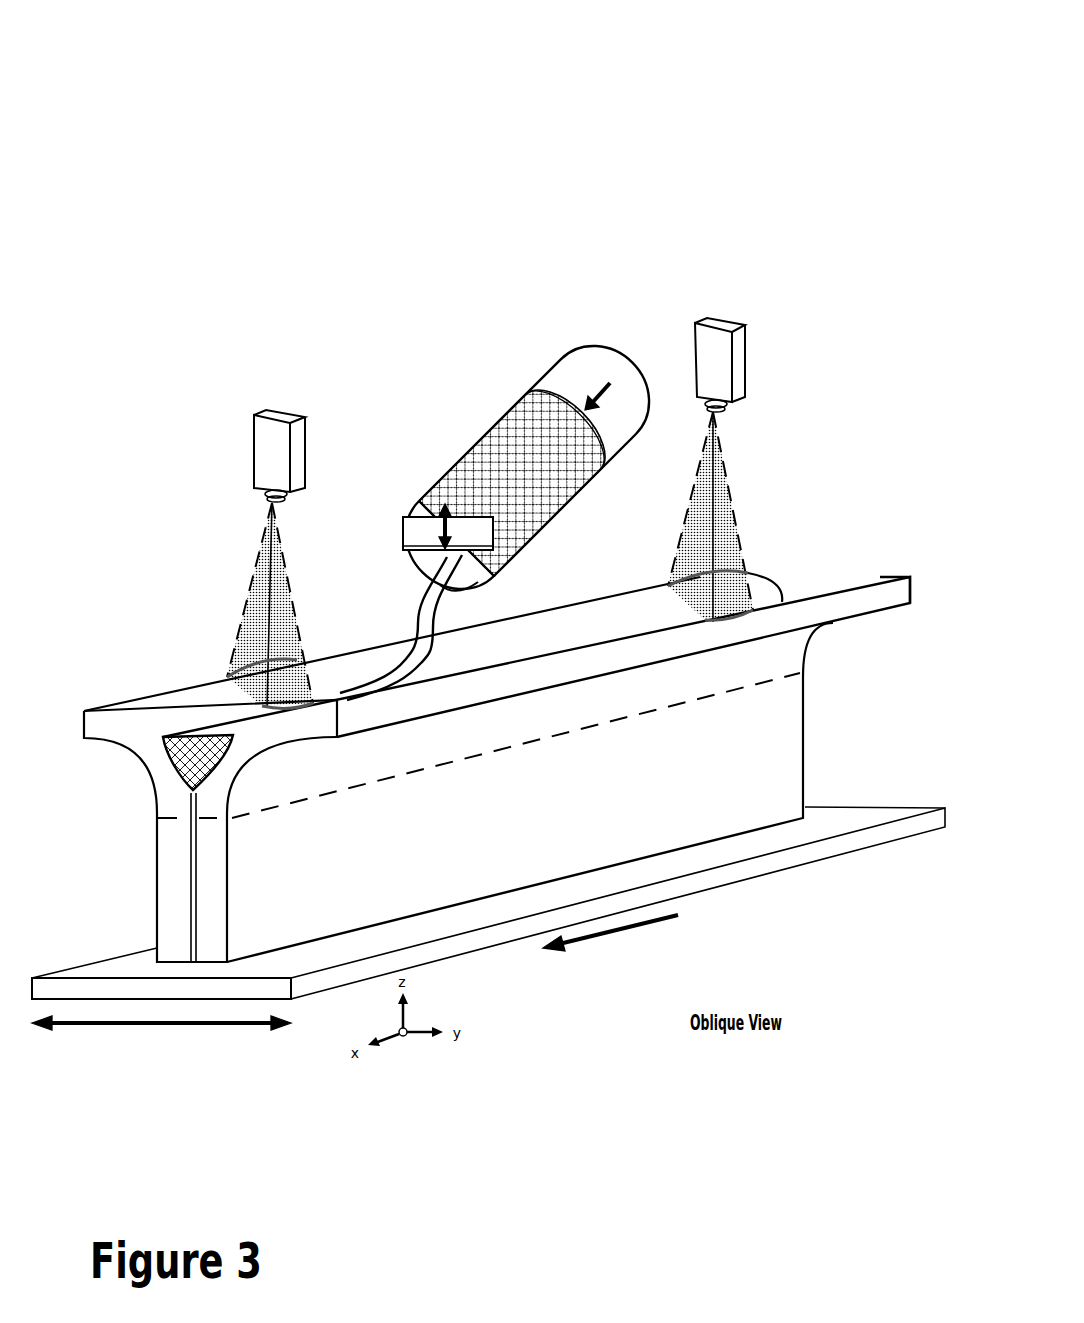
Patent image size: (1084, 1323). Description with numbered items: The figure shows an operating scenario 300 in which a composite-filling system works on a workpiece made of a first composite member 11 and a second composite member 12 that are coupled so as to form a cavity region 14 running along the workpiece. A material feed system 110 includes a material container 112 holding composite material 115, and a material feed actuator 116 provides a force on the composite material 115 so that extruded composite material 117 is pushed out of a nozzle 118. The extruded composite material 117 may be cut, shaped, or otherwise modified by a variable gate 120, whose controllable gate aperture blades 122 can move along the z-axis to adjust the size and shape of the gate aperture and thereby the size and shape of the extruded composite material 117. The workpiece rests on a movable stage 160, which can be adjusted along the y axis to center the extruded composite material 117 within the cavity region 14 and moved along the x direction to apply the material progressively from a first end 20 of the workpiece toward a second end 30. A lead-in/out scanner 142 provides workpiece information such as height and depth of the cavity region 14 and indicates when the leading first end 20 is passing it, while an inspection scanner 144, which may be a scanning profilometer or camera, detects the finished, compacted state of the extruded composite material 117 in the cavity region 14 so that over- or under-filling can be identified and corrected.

The operating scenario 300 is at (785, 97).
The first composite member 11 is at (120, 700).
The second composite member 12 is at (873, 583).
The cavity region 14 is at (165, 712).
The first end 20 is at (157, 932).
The second end 30 is at (805, 762).
The movable stage 160 is at (847, 807).
The material feed system 110 is at (488, 510).
The material container 112 is at (527, 467).
The composite material 115 is at (553, 363).
The material feed actuator 116 is at (557, 400).
The extruded composite material 117 is at (415, 625).
The nozzle 118 is at (475, 580).
The variable gate 120 is at (398, 538).
The gate aperture blades 122 is at (413, 515).
The lead-in/out scanner 142 is at (708, 317).
The inspection scanner 144 is at (267, 410).